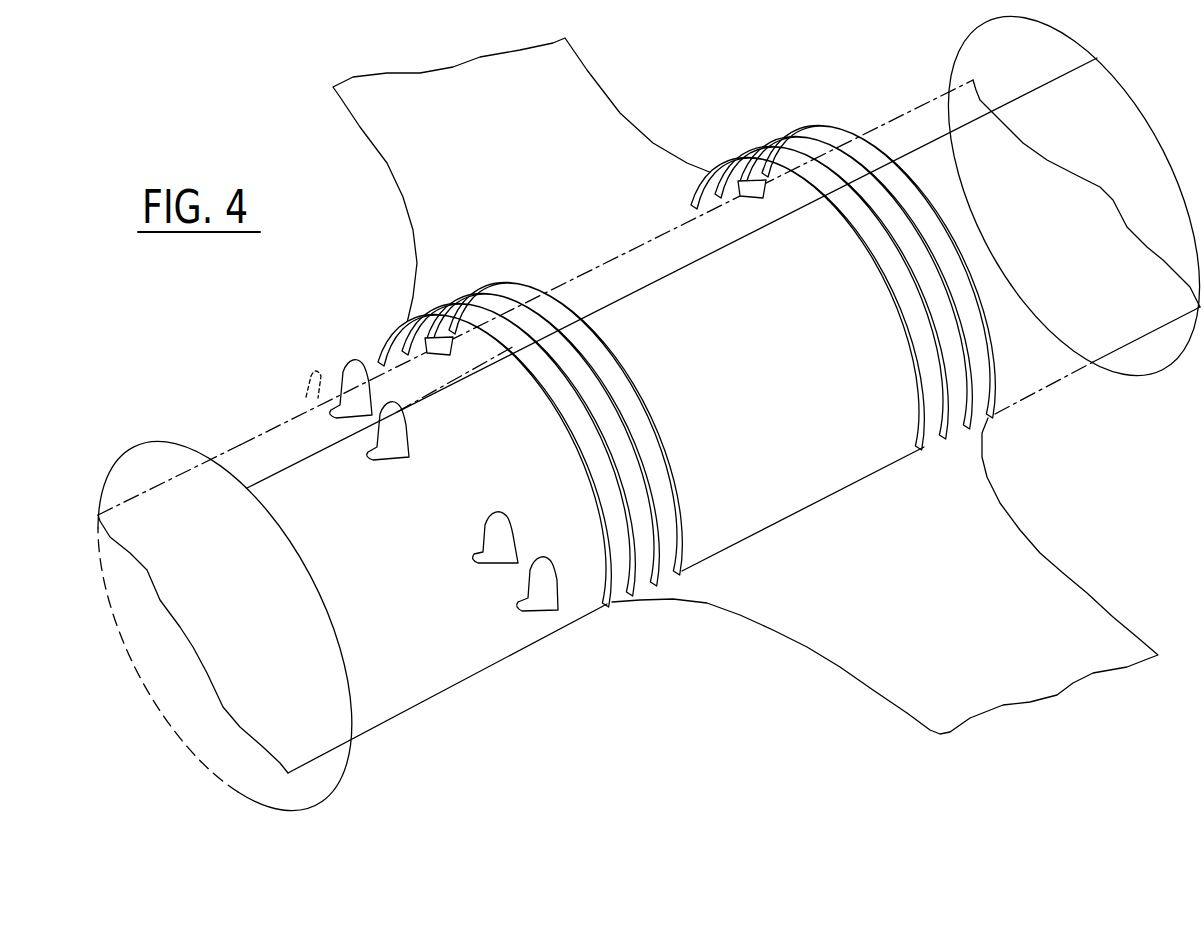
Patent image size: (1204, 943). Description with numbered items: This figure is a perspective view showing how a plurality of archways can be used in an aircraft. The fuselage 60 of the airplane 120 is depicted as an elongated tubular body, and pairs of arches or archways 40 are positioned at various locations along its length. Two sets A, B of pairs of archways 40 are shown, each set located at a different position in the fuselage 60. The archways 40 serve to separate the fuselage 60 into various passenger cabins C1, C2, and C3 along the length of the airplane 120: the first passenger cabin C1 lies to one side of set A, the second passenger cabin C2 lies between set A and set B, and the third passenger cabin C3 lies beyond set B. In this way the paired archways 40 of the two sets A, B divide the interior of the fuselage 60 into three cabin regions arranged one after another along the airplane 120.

The archways 40 is at (596, 513).
The fuselage 60 is at (487, 643).
The airplane 120 is at (298, 320).
The first set of pairs of archways A is at (473, 288).
The second set of pairs of archways B is at (777, 125).
The first passenger cabin C1 is at (394, 546).
The second passenger cabin C2 is at (760, 358).
The third passenger cabin C3 is at (1058, 234).